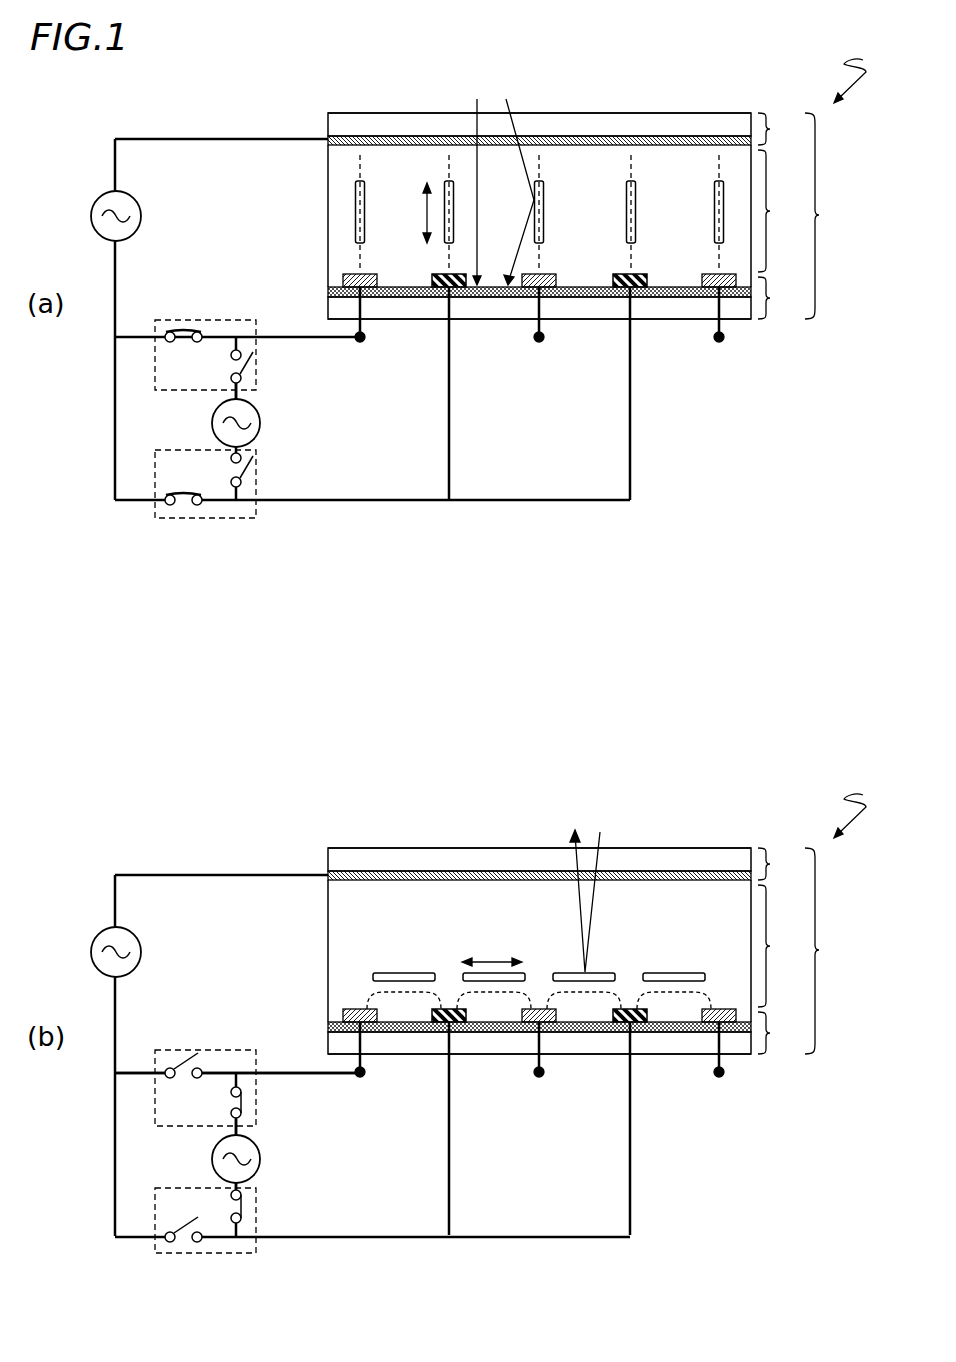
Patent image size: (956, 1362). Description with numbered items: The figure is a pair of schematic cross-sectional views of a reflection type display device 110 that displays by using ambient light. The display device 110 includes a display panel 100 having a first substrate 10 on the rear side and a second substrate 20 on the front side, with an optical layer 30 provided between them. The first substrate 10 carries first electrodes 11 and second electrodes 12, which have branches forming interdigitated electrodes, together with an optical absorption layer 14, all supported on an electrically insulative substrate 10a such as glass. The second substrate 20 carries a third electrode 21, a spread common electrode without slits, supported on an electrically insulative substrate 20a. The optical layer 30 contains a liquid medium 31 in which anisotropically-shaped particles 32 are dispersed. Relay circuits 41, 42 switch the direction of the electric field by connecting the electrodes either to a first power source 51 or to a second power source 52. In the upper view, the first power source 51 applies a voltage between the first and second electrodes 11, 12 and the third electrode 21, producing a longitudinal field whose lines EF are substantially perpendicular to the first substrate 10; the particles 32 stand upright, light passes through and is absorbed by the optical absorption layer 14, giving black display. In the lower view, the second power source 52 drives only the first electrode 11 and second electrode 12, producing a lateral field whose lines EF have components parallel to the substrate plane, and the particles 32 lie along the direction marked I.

The display device 110 is at (857, 436).
The display panel 100 is at (831, 583).
The second substrate 20 is at (563, 496).
The electrically insulative substrate 20a is at (328, 118).
The third electrode 21 is at (328, 140).
The medium 31 is at (338, 172).
The optical layer 30 is at (778, 578).
The anisotropically-shaped particles 32 is at (355, 212).
The first electrode 11 is at (343, 277).
The second electrode 12 is at (433, 277).
The optical absorption layer 14 is at (328, 292).
The first substrate 10 is at (563, 756).
The substrate 10a is at (328, 316).
The lines EF is at (543, 163).
The incident light / particle orientation direction I is at (466, 574).
The first power source 51 is at (141, 216).
The second power source 52 is at (260, 421).
The relay circuit 41 is at (256, 367).
The relay circuit 42 is at (256, 480).